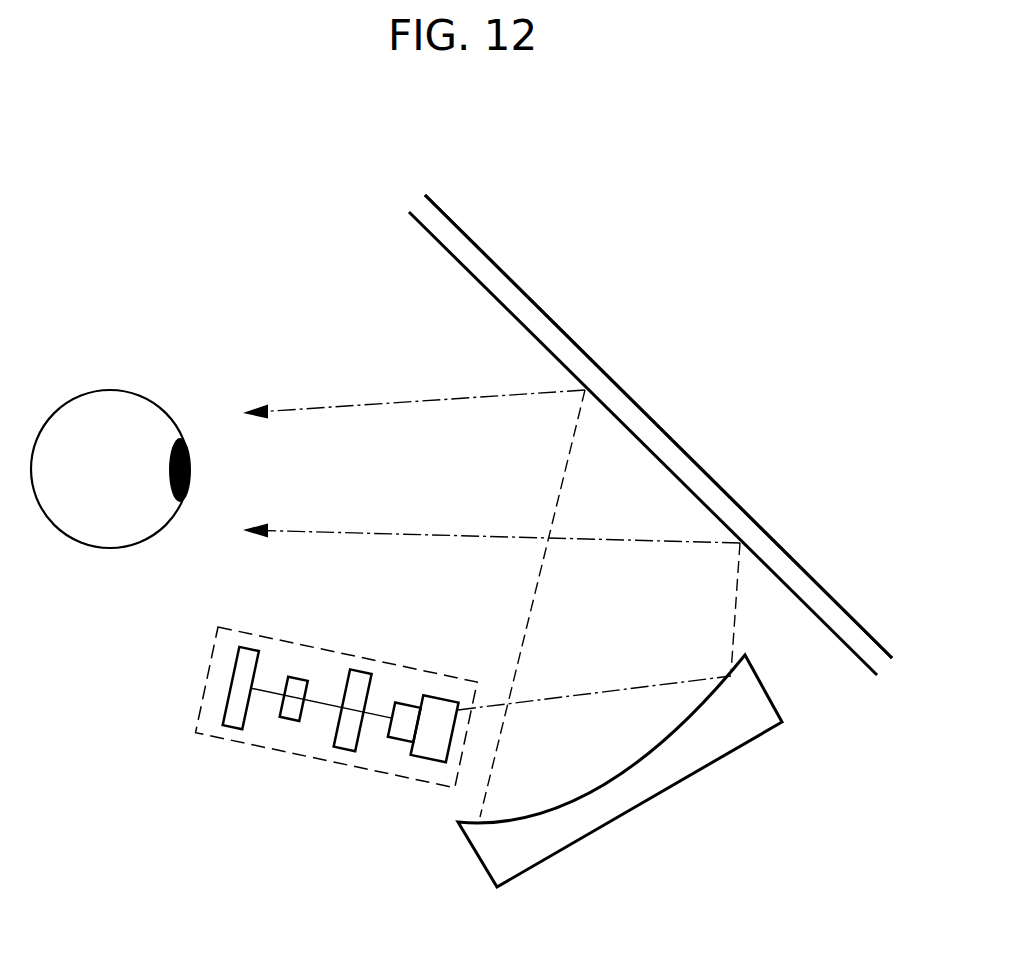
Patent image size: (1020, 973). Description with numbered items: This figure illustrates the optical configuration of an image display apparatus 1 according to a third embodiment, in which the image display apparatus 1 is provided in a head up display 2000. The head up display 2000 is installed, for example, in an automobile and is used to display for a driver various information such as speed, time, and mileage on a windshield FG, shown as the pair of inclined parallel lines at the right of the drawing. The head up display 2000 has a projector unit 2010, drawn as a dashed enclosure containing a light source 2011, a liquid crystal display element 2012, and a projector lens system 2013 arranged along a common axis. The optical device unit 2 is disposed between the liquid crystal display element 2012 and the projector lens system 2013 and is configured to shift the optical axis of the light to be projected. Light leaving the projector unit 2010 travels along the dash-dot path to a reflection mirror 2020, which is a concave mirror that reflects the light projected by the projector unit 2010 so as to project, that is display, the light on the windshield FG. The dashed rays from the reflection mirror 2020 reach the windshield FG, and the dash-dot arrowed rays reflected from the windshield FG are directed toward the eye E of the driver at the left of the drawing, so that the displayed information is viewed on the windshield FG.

The head up display 2000 is at (558, 211).
The image display apparatus 1 is at (658, 395).
The windshield FG is at (607, 401).
The eye of observer E is at (100, 408).
The projector unit 2010 is at (208, 672).
The light source 2011 is at (230, 727).
The liquid crystal display element 2012 is at (290, 718).
The optical device unit 2 is at (362, 672).
The projector lens system 2013 is at (430, 762).
The reflection mirror 2020 is at (598, 810).